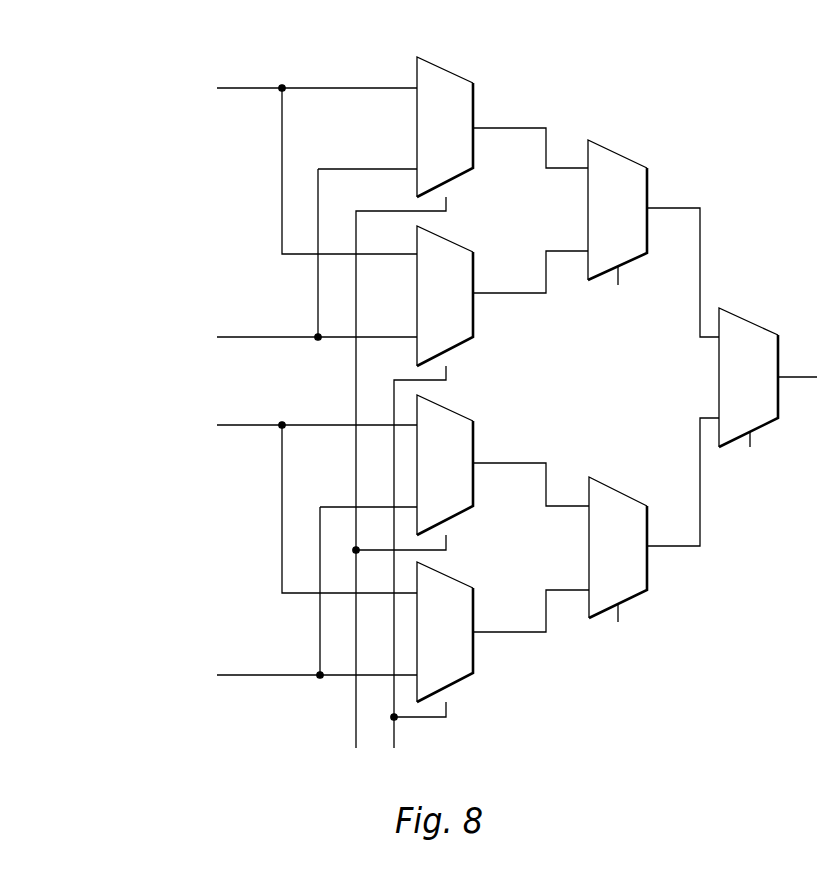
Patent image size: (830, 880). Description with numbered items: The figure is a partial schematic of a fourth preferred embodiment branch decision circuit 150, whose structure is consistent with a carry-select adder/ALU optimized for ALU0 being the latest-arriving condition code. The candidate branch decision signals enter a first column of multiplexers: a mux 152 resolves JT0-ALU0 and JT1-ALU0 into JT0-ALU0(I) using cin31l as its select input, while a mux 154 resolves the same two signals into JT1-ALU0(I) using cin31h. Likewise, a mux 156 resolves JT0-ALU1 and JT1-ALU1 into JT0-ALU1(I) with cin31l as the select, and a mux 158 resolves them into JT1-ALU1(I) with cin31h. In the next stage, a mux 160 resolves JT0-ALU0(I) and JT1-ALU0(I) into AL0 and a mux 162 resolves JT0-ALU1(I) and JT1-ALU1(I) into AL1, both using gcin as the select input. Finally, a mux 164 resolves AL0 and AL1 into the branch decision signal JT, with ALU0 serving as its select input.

The branch decision circuit 150 is at (140, 447).
The mux 152 is at (462, 650).
The mux 154 is at (462, 483).
The mux 156 is at (462, 314).
The mux 158 is at (462, 145).
The mux 160 is at (635, 567).
The mux 162 is at (634, 229).
The mux 164 is at (765, 397).